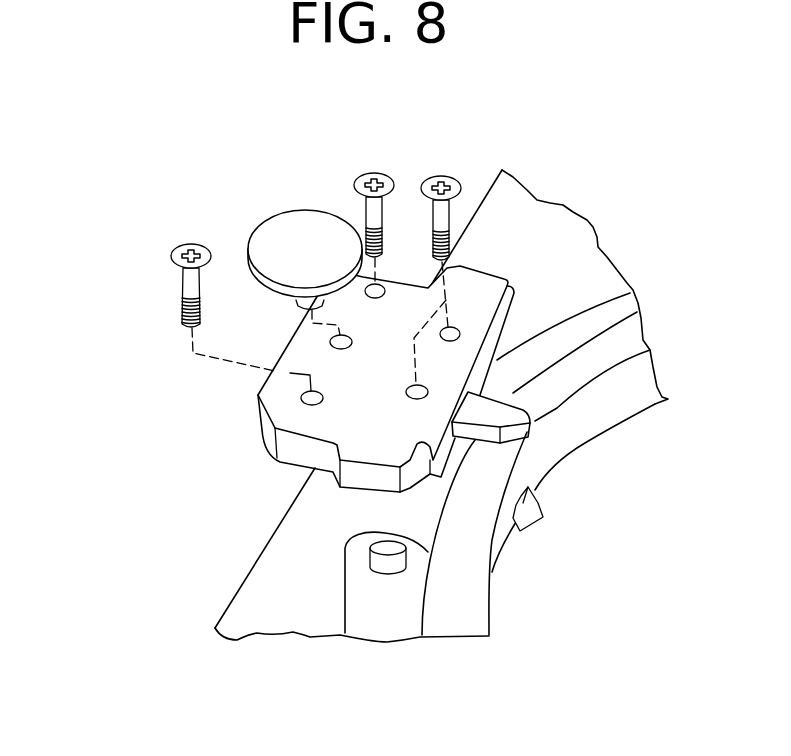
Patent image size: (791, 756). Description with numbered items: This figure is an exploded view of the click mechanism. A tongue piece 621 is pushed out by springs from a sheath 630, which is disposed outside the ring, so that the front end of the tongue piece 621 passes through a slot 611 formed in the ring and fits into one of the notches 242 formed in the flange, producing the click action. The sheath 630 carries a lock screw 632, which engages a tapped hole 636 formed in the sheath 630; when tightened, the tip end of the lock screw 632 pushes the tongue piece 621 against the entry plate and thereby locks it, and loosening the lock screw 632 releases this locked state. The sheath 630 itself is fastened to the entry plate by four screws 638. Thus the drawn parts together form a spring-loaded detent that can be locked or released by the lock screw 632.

The notch 242 is at (543, 517).
The slot 611 is at (528, 488).
The tongue piece 621 is at (514, 413).
The sheath 630 is at (301, 420).
The lock screw 632 is at (303, 231).
The tapped hole 636 is at (290, 373).
The screws 638 is at (182, 293).